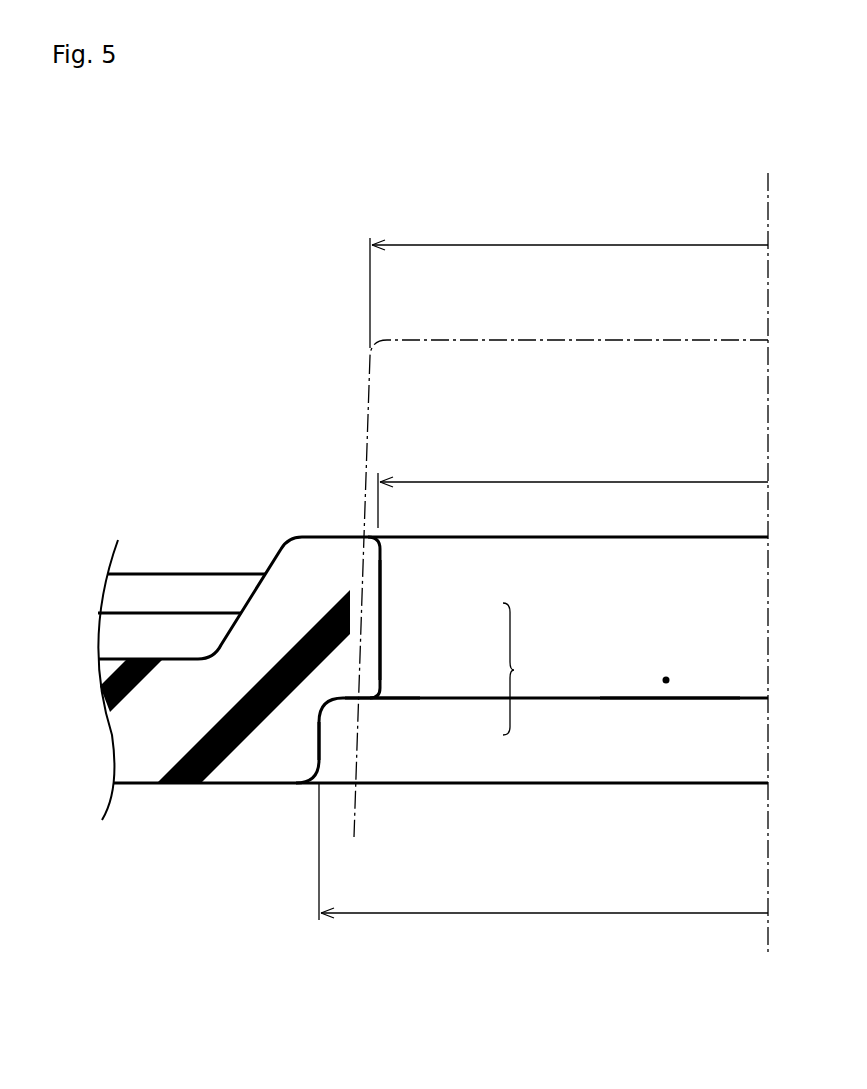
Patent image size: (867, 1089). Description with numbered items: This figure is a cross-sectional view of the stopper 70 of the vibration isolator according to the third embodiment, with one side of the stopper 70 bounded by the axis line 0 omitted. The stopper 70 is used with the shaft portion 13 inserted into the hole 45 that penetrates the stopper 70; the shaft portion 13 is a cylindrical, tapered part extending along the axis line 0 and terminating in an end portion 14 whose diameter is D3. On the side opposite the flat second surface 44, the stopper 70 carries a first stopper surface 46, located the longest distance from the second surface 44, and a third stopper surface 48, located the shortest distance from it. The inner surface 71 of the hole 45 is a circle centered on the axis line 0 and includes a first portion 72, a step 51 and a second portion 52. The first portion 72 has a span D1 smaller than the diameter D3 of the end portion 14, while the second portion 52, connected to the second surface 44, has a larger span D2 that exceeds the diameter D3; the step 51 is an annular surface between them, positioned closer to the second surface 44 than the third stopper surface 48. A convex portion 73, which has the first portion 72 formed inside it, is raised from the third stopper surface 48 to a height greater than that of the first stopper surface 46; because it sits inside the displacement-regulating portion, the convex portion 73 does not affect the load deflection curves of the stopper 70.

The axis line 0 is at (767, 190).
The shaft portion 13 is at (367, 412).
The end portion 14 is at (552, 341).
The second surface 44 is at (237, 785).
The hole 45 is at (666, 683).
The first stopper surface 46 is at (187, 572).
The third stopper surface 48 is at (182, 657).
The step 51 is at (363, 698).
The second portion 52 is at (320, 741).
The stopper 70 is at (207, 353).
The inner surface 71 is at (524, 669).
The first portion 72 is at (381, 635).
The convex portion 73 is at (331, 556).
The span of first portion D1 is at (580, 481).
The span of second portion D2 is at (550, 912).
The diameter of end portion D3 is at (576, 244).